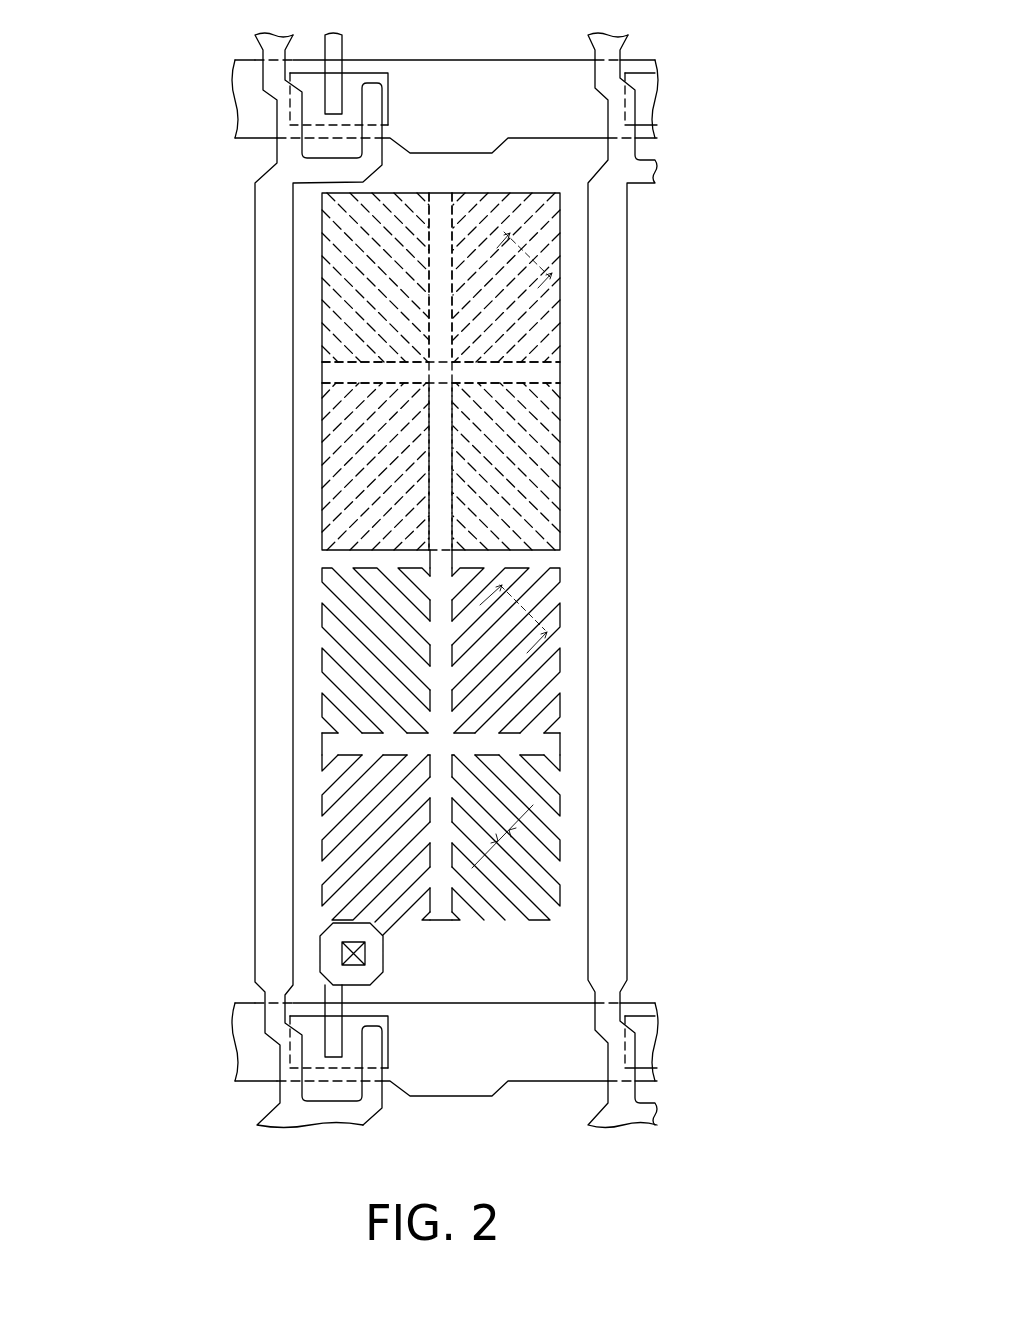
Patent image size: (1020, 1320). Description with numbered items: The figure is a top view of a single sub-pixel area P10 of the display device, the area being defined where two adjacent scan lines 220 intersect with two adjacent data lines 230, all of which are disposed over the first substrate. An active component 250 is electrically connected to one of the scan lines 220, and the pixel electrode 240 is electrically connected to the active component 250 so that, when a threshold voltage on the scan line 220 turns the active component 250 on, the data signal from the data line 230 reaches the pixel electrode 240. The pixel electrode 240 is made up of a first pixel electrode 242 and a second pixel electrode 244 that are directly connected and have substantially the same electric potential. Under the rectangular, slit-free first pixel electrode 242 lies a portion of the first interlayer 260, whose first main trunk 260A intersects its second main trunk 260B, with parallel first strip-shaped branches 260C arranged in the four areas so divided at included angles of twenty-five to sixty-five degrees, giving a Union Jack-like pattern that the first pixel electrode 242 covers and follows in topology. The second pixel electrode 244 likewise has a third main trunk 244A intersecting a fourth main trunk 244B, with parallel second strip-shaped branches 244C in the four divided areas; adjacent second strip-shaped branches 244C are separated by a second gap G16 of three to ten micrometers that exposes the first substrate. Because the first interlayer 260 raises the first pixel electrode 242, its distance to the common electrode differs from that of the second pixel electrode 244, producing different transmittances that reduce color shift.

The scan line 220 is at (464, 88).
The data line 230 is at (275, 853).
The pixel electrode 240 is at (295, 628).
The first pixel electrode 242 is at (357, 528).
The second pixel electrode 244 is at (330, 751).
The third main trunk 244A is at (440, 591).
The fourth main trunk 244B is at (347, 743).
The second strip-shaped branches 244C is at (338, 632).
The active component 250 is at (288, 995).
The first interlayer 260 is at (329, 371).
The first main trunk 260A is at (440, 240).
The second main trunk 260B is at (343, 373).
The first strip-shaped branches 260C is at (336, 303).
The second gap G16 is at (507, 838).
The sub-pixel area P10 is at (537, 972).